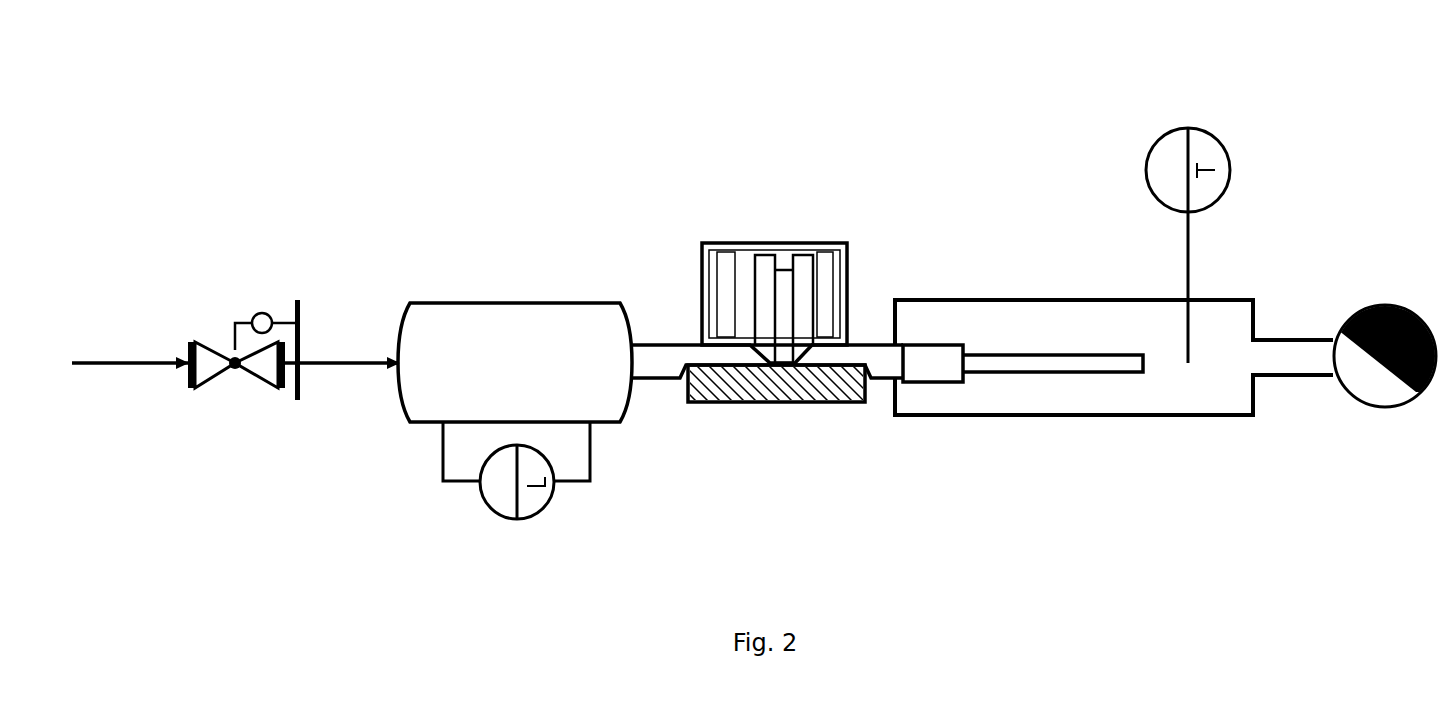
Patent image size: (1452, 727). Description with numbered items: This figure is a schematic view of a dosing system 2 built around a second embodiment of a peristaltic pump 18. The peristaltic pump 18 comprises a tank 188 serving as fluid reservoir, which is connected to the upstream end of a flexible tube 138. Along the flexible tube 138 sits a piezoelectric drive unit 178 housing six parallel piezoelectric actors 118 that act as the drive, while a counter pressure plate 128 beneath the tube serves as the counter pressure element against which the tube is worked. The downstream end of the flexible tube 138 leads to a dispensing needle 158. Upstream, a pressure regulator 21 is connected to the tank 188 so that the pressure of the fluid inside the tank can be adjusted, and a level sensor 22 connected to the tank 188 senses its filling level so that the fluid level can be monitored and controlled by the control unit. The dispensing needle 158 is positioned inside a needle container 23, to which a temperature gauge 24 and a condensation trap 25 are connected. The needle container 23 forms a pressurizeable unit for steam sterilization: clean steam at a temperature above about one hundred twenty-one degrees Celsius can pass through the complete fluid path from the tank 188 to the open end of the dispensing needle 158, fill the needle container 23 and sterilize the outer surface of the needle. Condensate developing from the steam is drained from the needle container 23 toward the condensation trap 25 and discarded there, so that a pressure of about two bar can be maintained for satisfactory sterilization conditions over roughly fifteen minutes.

The dosing system 2 is at (278, 248).
The peristaltic pump 18 is at (717, 208).
The pressure regulator 21 is at (205, 368).
The level sensor 22 is at (497, 480).
The needle container 23 is at (1107, 383).
The temperature gauge 24 is at (1205, 152).
The condensation trap 25 is at (1375, 378).
The piezoelectric actors 118 is at (808, 280).
The counter pressure plate 128 is at (728, 383).
The flexible tube 138 is at (663, 367).
The dispensing needle 158 is at (948, 365).
The piezoelectric drive unit 178 is at (845, 283).
The tank 188 is at (483, 330).